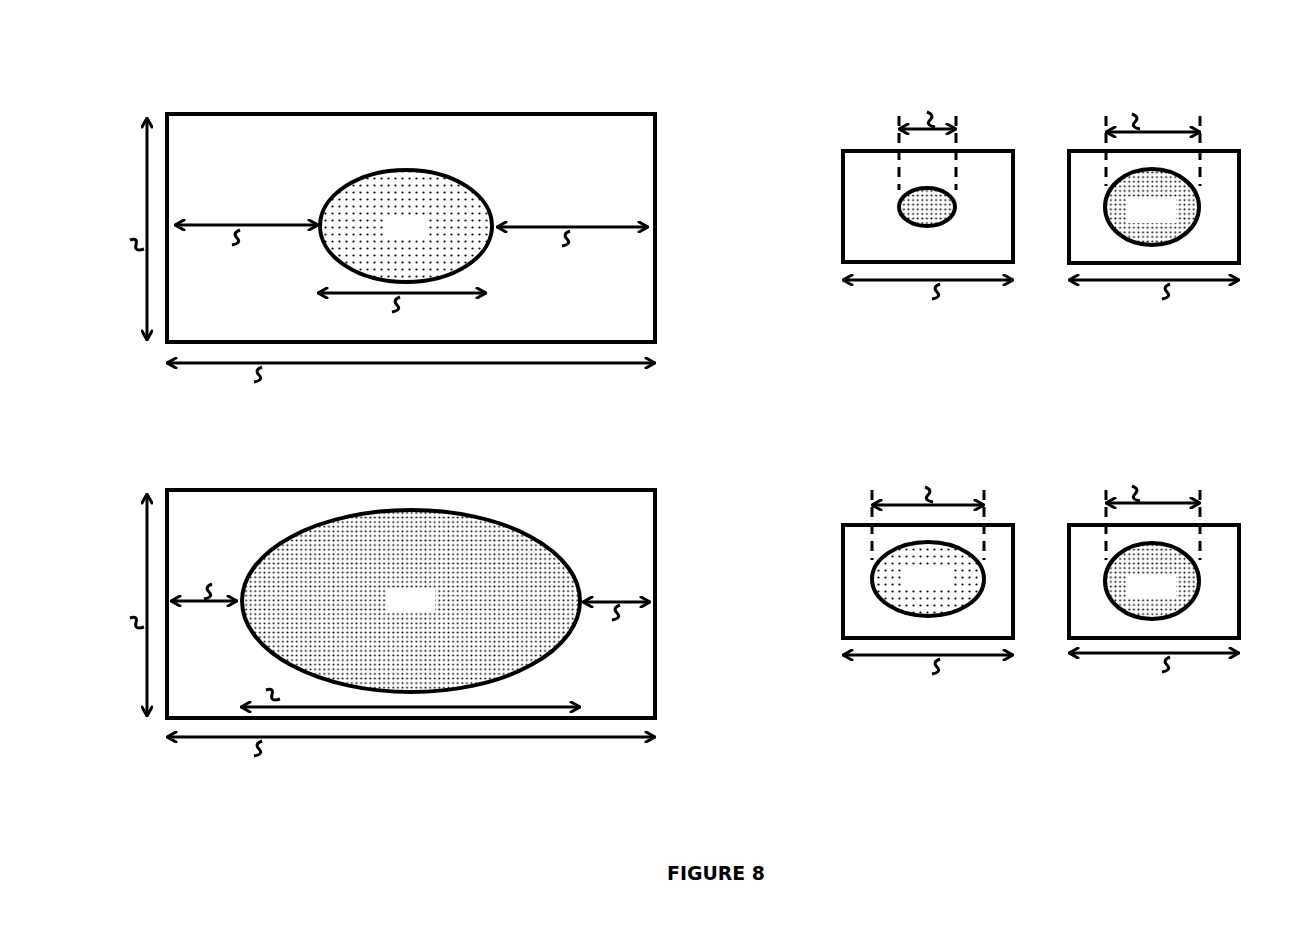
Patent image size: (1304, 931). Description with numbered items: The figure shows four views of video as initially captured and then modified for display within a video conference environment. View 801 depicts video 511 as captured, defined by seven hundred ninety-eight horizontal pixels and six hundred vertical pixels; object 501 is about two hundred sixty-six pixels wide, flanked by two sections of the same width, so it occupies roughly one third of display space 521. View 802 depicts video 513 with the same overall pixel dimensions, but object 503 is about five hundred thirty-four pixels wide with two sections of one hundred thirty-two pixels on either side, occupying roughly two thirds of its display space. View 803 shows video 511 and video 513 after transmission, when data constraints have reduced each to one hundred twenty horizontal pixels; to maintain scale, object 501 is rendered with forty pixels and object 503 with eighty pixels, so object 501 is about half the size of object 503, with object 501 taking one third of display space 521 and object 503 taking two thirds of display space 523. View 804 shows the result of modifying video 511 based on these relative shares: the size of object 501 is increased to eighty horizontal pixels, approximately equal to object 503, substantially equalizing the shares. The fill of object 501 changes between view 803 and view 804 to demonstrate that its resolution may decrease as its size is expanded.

The view 801 is at (104, 62).
The view 802 is at (104, 437).
The view 803 is at (822, 62).
The view 804 is at (822, 437).
The video 511 is at (224, 113).
The video 513 is at (224, 489).
The object 501 is at (897, 225).
The object 503 is at (720, 430).
The display space 521 is at (809, 425).
The display space 523 is at (924, 433).